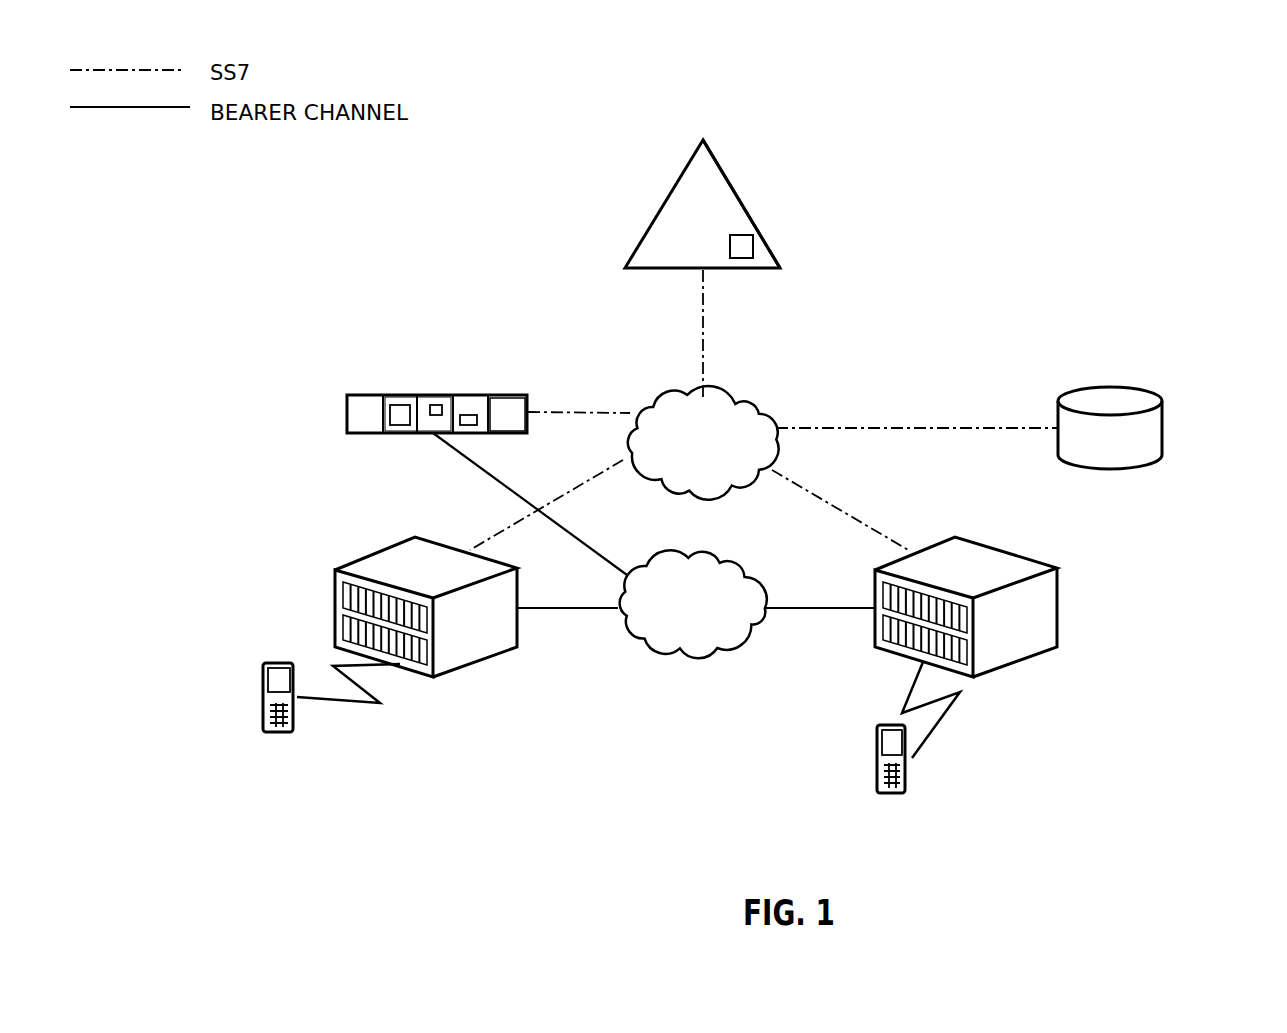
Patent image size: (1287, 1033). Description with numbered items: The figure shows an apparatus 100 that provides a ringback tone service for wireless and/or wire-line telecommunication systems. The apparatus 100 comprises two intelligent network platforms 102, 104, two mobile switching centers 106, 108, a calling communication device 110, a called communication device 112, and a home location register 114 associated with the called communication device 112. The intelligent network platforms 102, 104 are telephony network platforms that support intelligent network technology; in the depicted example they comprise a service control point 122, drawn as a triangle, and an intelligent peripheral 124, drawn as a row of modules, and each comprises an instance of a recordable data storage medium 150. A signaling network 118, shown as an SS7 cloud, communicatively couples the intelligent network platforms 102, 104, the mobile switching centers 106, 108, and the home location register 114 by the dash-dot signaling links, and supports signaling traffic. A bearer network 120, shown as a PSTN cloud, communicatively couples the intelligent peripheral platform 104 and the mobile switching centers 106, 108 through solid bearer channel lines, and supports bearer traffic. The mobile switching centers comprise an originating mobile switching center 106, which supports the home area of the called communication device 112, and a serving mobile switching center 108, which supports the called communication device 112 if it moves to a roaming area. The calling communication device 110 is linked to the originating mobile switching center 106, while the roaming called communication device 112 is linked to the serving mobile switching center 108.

The apparatus 100 is at (542, 97).
The intelligent network platform 102 is at (766, 148).
The intelligent network platform 104 is at (351, 448).
The originating mobile switching center 106 is at (375, 549).
The serving mobile switching center 108 is at (1002, 552).
The calling communication device 110 is at (276, 733).
The called communication device 112 is at (890, 794).
The home location register 114 is at (1110, 469).
The signaling network 118 is at (737, 492).
The bearer network 120 is at (725, 650).
The service control point 122 is at (742, 203).
The intelligent peripheral 124 is at (437, 395).
The recordable data storage medium 150 is at (755, 252).